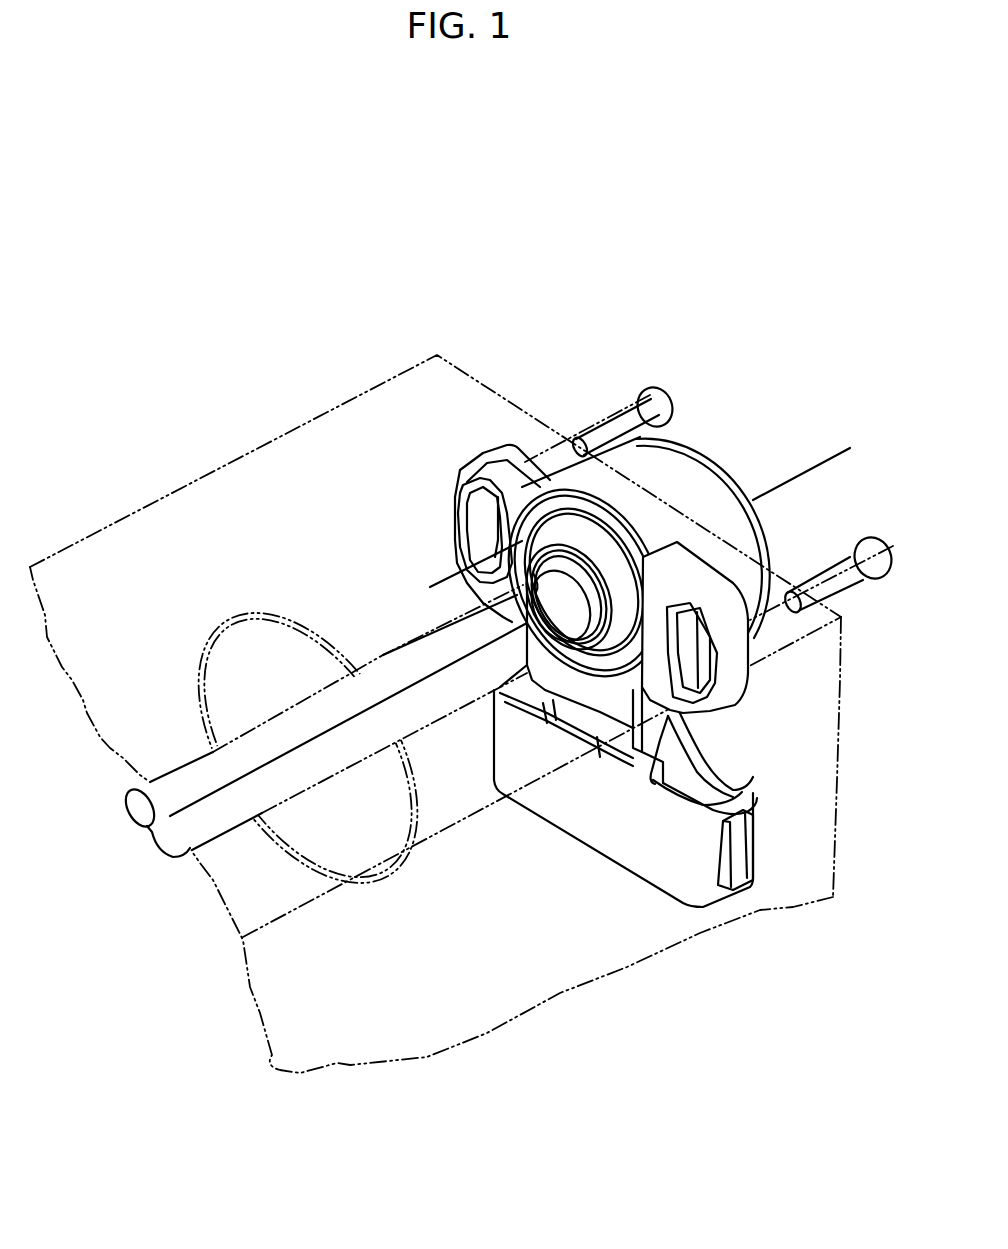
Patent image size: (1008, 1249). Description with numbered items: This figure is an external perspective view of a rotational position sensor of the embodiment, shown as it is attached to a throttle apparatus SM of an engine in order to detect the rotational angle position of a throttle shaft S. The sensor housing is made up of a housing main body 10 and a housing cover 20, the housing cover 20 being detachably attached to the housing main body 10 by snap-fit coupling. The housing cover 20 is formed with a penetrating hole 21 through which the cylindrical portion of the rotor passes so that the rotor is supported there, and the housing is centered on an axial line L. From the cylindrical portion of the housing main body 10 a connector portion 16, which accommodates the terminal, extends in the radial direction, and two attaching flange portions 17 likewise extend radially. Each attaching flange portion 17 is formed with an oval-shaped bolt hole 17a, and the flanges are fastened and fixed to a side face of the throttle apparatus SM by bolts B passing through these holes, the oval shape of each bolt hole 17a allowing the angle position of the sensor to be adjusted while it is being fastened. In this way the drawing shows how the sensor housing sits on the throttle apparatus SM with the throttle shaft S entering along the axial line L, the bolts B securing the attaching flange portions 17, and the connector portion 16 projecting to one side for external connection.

The throttle apparatus SM is at (277, 438).
The throttle shaft S is at (385, 655).
The housing main body 10 is at (634, 453).
The housing cover 20 is at (553, 527).
The penetrating hole 21 is at (555, 607).
The attaching flange portion 17 is at (485, 452).
The bolt hole 17a is at (475, 503).
The connector portion 16 is at (634, 862).
The bolt B is at (660, 390).
The axial line L is at (767, 493).